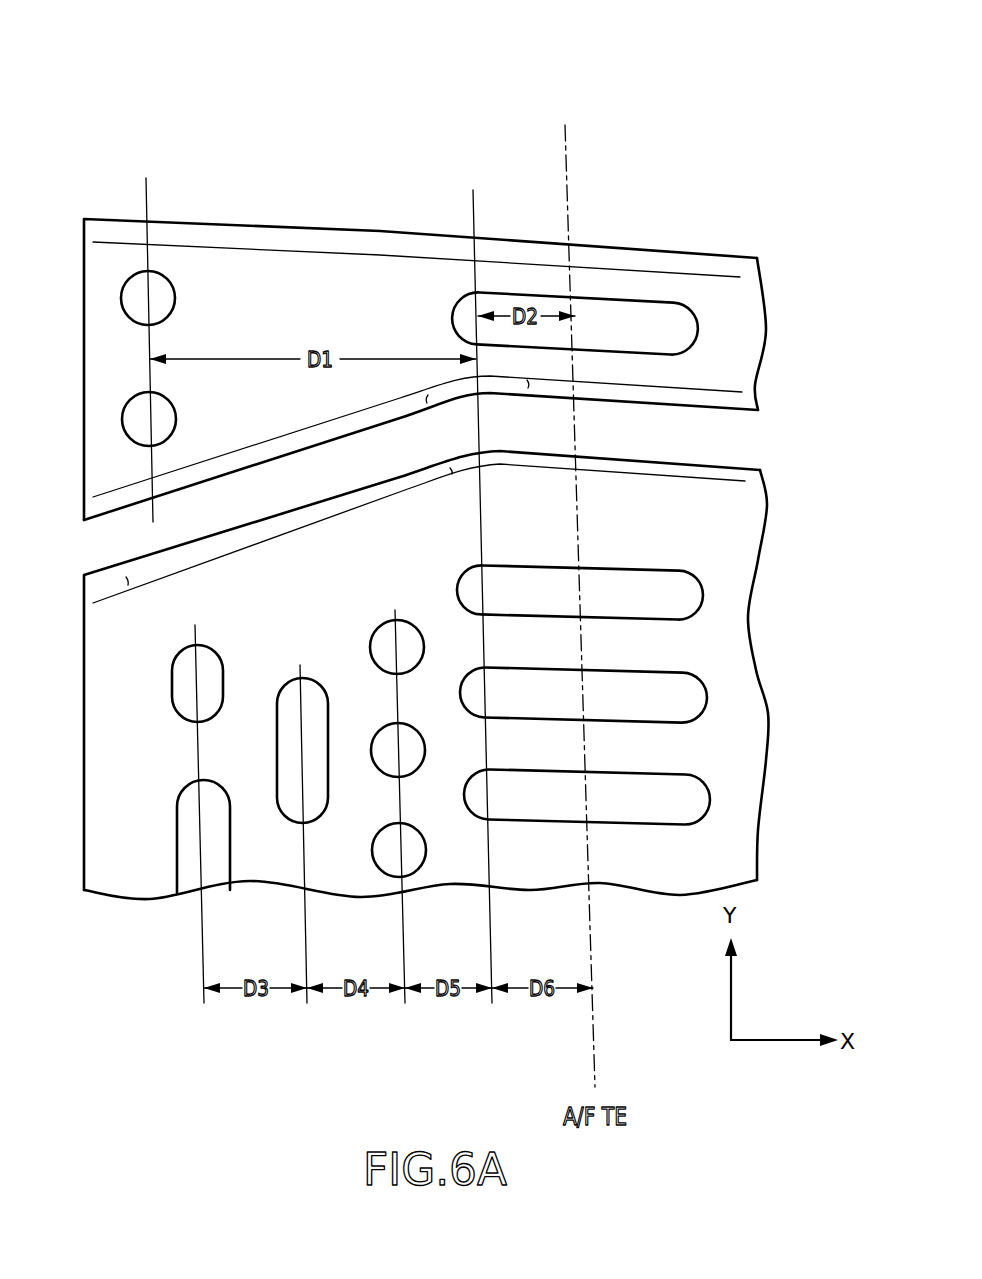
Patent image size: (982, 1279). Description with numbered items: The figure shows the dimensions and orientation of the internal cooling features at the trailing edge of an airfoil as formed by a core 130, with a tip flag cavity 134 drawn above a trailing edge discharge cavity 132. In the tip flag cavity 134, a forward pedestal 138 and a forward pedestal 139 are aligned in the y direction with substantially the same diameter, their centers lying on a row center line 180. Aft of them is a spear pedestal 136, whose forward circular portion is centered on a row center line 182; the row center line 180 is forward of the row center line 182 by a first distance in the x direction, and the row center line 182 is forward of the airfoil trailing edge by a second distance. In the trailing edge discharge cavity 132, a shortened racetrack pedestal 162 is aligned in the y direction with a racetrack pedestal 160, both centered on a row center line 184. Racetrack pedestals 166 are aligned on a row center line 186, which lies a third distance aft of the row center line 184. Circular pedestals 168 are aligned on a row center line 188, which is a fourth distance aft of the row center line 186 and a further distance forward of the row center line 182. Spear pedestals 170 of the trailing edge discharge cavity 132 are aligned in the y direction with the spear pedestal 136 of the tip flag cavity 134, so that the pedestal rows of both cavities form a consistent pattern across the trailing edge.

The core 130 is at (173, 122).
The trailing edge discharge cavity 132 is at (750, 492).
The tip flag cavity 134 is at (728, 290).
The spear pedestal 136 is at (650, 303).
The forward pedestal 138 is at (168, 280).
The forward pedestal 139 is at (143, 412).
The racetrack pedestal 160 is at (180, 841).
The shortened racetrack pedestal 162 is at (172, 678).
The racetrack pedestal 166 is at (287, 684).
The circular pedestal 168 is at (376, 626).
The spear pedestal 170 is at (640, 568).
The row center line 180 is at (147, 203).
The row center line 182 is at (472, 583).
The row center line 184 is at (203, 933).
The row center line 186 is at (306, 907).
The row center line 188 is at (404, 932).